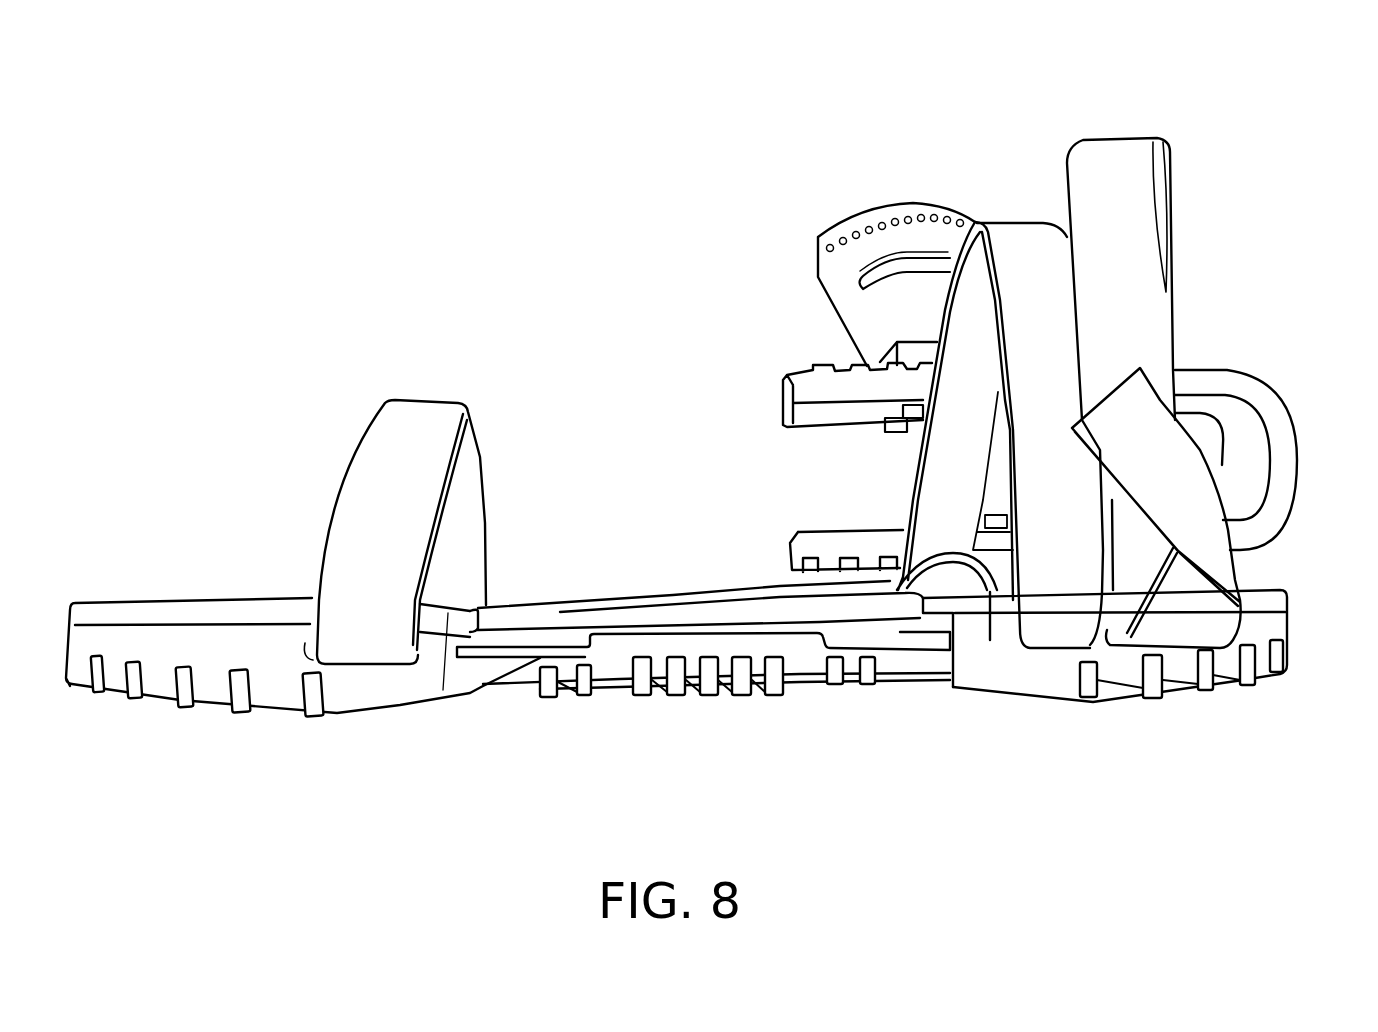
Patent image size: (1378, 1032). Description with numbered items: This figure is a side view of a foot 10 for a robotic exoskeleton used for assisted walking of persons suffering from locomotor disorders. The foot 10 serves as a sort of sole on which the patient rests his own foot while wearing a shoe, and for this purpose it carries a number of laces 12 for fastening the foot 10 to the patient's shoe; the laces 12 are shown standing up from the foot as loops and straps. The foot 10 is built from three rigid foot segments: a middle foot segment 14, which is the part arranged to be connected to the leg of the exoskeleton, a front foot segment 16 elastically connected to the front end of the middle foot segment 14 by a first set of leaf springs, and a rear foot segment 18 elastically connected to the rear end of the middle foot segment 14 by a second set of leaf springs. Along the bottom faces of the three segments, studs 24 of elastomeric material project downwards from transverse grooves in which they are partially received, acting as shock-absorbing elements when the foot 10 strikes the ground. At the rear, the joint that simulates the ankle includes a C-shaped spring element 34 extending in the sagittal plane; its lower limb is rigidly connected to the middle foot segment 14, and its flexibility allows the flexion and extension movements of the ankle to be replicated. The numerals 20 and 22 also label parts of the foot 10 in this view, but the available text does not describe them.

The foot 10 is at (790, 703).
The laces 12 is at (1005, 240).
The middle foot segment 14 is at (625, 600).
The front foot segment 16 is at (162, 680).
The rear foot segment 18 is at (1290, 620).
The plate 20 is at (493, 687).
The heel connector 22 is at (960, 605).
The studs 24 is at (340, 717).
The C-shaped spring element 34 is at (1290, 420).